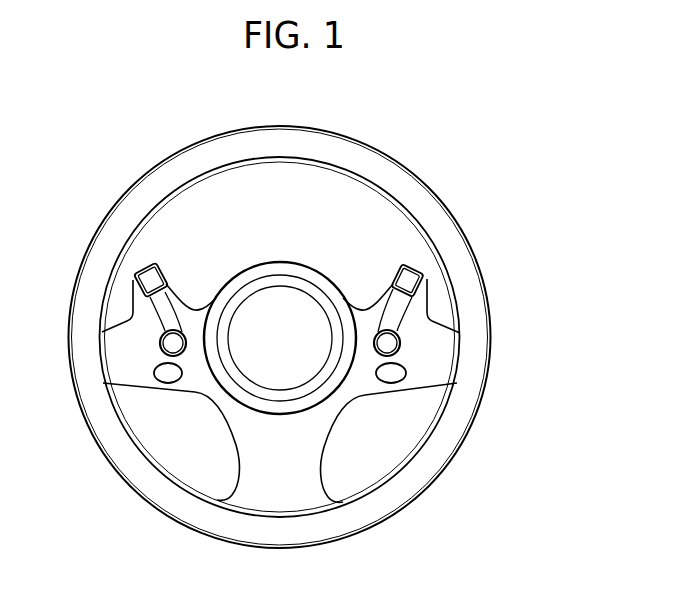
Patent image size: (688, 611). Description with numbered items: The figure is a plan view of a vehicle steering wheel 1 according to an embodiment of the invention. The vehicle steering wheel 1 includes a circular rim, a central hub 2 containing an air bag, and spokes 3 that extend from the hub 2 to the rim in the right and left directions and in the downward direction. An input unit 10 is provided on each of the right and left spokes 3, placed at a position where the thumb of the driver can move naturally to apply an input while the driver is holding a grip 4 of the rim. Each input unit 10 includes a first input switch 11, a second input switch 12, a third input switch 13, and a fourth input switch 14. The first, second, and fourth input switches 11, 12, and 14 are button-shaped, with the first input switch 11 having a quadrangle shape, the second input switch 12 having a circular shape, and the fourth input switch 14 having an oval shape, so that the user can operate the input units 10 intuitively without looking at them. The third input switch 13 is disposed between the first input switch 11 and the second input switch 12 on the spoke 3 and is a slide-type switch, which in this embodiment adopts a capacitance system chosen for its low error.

The vehicle steering wheel 1 is at (453, 170).
The hub 2 is at (245, 273).
The spokes 3 is at (393, 392).
The grip 4 is at (496, 327).
The input unit 10 is at (433, 293).
The first input switch 11 is at (409, 272).
The second input switch 12 is at (400, 345).
The third input switch 13 is at (395, 305).
The fourth input switch 14 is at (405, 372).